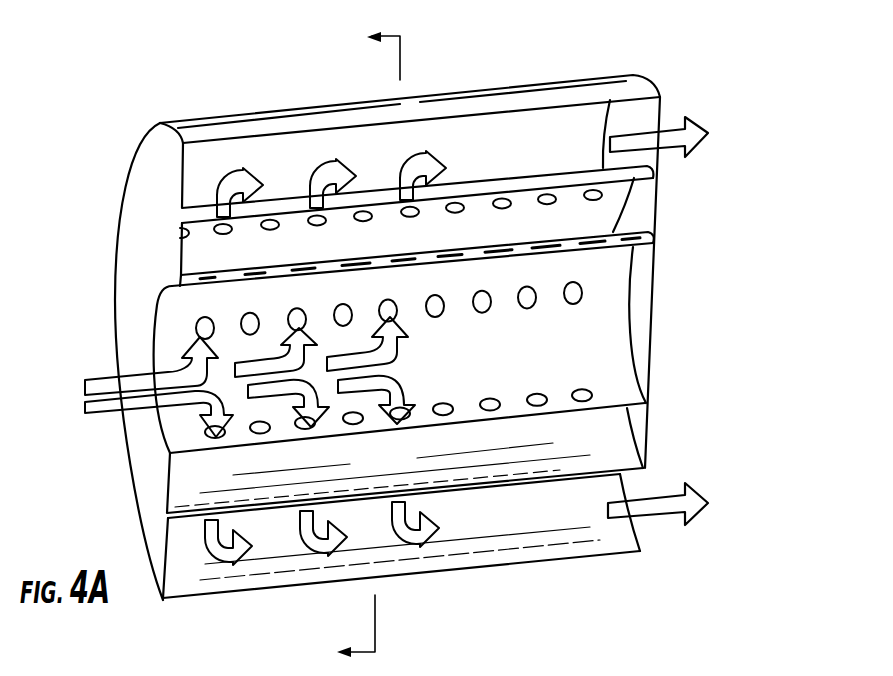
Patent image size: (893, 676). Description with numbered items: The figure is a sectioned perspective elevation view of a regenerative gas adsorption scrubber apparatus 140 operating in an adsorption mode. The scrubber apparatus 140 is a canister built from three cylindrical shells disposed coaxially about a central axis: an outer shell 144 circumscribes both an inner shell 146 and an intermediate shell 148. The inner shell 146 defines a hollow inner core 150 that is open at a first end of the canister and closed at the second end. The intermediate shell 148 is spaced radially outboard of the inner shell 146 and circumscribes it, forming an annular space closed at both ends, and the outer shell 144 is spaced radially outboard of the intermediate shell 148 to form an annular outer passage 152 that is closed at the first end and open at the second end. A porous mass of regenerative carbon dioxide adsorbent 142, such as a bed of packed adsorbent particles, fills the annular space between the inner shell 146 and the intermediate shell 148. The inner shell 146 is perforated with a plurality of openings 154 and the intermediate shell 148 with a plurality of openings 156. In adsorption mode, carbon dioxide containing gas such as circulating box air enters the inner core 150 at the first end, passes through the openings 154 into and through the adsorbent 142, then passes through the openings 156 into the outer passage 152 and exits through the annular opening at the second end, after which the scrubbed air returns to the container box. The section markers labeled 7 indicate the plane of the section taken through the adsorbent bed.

The scrubber apparatus 140 is at (675, 43).
The porous mass of regenerative carbon dioxide adsorbent 142 is at (612, 213).
The outer shell 144 is at (455, 100).
The inner shell 146 is at (628, 258).
The intermediate shell 148 is at (650, 172).
The inner core 150 is at (578, 381).
The outer passage 152 is at (305, 161).
The openings 154 is at (432, 300).
The openings 156 is at (455, 213).
The section line 7- 7 is at (358, 346).